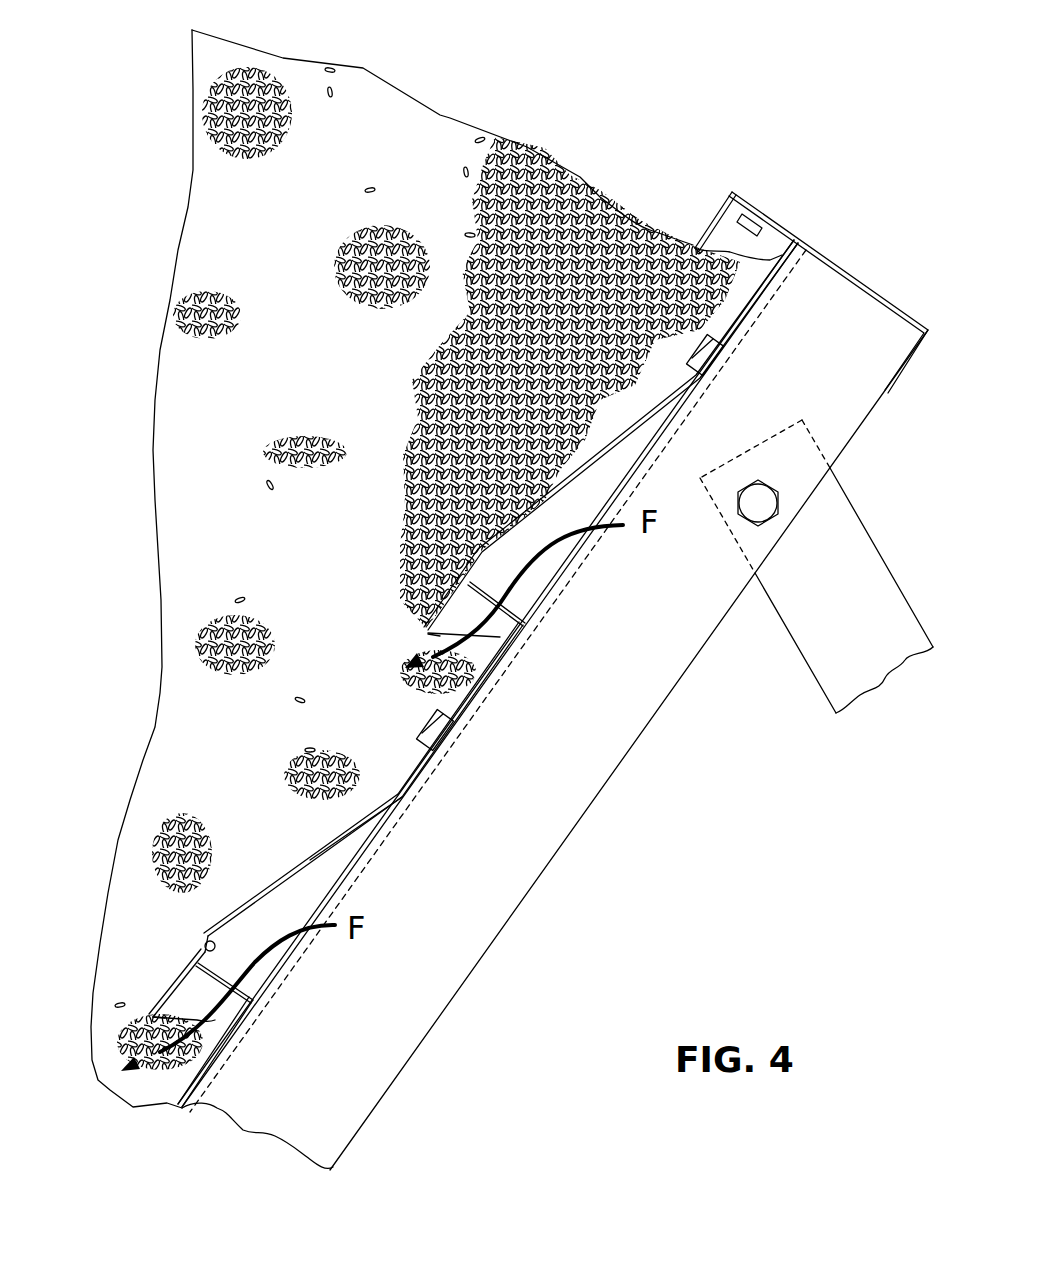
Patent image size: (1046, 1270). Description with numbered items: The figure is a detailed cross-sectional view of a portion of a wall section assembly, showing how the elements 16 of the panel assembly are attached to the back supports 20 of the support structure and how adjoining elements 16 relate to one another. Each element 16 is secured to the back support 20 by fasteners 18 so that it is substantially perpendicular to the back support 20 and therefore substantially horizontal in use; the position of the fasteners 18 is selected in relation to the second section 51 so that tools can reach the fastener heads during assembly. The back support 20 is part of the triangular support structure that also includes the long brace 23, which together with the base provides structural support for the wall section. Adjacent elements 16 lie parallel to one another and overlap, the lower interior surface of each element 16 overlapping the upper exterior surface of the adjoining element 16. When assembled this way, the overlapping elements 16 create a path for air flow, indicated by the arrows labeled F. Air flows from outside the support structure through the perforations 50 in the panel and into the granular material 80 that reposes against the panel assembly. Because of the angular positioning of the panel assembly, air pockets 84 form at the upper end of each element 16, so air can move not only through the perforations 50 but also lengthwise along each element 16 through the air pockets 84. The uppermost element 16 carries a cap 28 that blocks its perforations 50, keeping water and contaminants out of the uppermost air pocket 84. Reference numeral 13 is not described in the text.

The granular material 80 is at (350, 392).
The back support 20 is at (553, 705).
The fastener 18 is at (445, 716).
The cap 28 is at (873, 283).
The long brace 23 is at (857, 556).
The perforation 50 is at (757, 203).
The air pocket 84 is at (722, 237).
The second section 51 is at (402, 768).
The element 16 is at (307, 860).
The hook end 13 is at (205, 933).